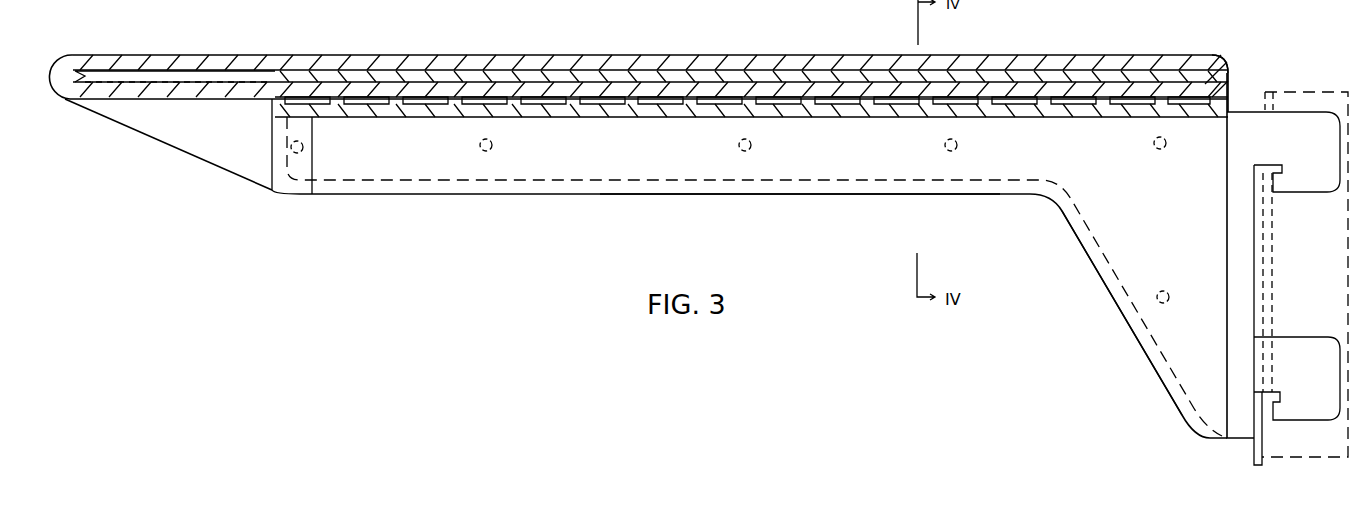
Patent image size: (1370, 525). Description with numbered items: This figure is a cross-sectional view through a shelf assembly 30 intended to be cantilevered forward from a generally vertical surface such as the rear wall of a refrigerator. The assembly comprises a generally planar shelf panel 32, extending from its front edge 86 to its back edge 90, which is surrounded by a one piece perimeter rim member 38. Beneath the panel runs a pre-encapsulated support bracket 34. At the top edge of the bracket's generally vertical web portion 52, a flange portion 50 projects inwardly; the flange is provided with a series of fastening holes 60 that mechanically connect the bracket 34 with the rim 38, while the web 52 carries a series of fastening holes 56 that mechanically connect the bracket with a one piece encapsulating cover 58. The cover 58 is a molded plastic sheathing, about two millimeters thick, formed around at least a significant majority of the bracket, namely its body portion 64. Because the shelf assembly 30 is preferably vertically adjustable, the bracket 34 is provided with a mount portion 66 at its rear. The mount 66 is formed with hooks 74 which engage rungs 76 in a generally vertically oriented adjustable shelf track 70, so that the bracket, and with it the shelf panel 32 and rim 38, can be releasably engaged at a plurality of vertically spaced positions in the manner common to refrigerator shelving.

The shelf assembly 30 is at (456, 296).
The shelf panel 32 is at (522, 74).
The support bracket 34 is at (721, 200).
The perimeter rim member 38 is at (292, 60).
The flange portion 50 is at (285, 102).
The web portion 52 is at (1085, 193).
The fastening holes 56 is at (303, 152).
The encapsulating cover 58 is at (800, 213).
The fastening holes 60 is at (505, 104).
The body portion 64 is at (557, 178).
The mount portion 66 is at (1235, 281).
The adjustable shelf track 70 is at (1323, 92).
The hooks 74 is at (1296, 332).
The rungs 76 is at (1267, 276).
The front edge 86 is at (63, 100).
The back edge 90 is at (1204, 73).